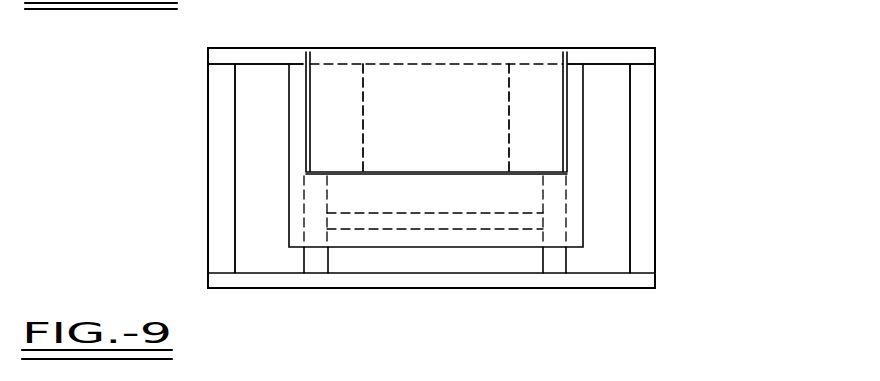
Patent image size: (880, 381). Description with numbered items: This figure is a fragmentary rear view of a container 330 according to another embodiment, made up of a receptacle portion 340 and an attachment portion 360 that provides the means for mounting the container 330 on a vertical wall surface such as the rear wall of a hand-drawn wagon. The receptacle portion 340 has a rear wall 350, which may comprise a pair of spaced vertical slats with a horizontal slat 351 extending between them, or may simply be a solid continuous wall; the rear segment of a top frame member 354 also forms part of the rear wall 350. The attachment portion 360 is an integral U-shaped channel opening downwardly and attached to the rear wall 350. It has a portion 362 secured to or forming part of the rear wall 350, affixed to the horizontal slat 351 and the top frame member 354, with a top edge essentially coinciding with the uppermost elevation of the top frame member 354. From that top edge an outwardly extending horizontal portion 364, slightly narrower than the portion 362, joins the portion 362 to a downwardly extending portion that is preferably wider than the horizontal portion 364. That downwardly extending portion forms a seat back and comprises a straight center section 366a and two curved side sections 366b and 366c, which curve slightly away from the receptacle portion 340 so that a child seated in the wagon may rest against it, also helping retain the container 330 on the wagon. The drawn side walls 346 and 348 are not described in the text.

The container 330 is at (198, 70).
The receptacle portion 340 is at (200, 99).
The left side wall 346 is at (208, 203).
The right side wall 348 is at (648, 97).
The top frame member 354 is at (620, 48).
The attachment portion 360 is at (334, 40).
The horizontal portion 364 is at (432, 72).
The straight center section 366a is at (452, 95).
The curved side section 366b is at (318, 128).
The curved side section 366c is at (548, 137).
The portion secured to rear wall 362 is at (578, 196).
The horizontal slat 351 is at (463, 227).
The rear wall 350 is at (320, 265).